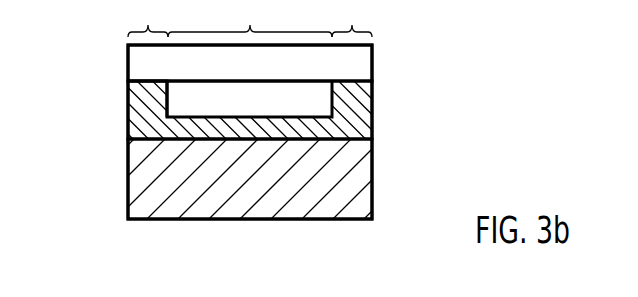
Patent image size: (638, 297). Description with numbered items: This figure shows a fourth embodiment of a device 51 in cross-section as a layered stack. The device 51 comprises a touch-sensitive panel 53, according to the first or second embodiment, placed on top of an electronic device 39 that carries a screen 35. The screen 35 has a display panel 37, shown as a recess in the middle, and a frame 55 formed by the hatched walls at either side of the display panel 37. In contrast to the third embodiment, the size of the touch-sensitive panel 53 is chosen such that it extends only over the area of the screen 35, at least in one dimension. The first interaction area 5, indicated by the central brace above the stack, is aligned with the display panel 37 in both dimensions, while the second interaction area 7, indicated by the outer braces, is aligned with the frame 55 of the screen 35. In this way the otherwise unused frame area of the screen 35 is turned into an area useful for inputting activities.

The device 51 is at (112, 201).
The touch-sensitive panel 53 is at (377, 69).
The screen 35 is at (377, 109).
The display panel 37 is at (177, 98).
The frame 55 is at (140, 97).
The electronic device 39 is at (372, 192).
The second interaction area 7 is at (250, 18).
The first interaction area 5 is at (250, 18).